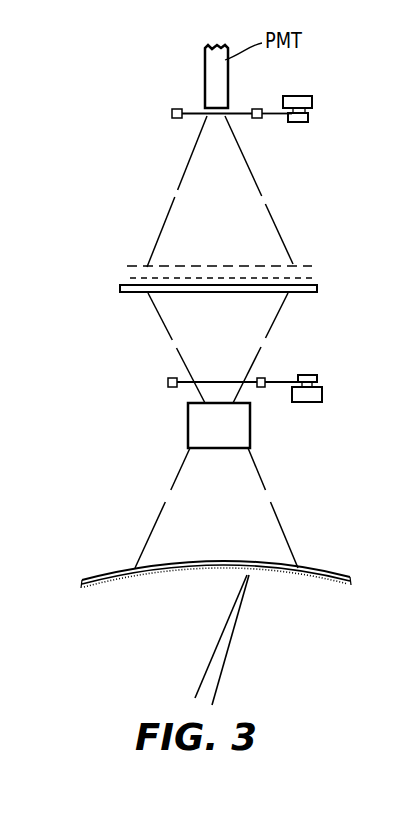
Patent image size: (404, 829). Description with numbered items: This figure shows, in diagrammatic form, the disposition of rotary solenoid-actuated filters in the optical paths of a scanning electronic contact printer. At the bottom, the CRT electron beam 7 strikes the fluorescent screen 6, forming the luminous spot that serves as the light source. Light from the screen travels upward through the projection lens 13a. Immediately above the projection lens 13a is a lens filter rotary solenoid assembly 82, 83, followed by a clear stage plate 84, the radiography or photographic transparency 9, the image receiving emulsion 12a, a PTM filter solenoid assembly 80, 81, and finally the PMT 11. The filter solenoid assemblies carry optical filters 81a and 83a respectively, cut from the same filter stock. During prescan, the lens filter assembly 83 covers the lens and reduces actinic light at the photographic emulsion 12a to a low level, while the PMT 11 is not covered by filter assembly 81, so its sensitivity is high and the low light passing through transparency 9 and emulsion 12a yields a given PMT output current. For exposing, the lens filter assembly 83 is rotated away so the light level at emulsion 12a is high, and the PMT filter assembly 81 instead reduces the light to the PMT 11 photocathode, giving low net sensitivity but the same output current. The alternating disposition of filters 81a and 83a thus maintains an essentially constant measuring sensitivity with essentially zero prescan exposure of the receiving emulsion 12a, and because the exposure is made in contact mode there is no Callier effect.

The PMT 11 is at (205, 70).
The PMT filter solenoid assembly 81 is at (172, 113).
The optical filter 81a is at (198, 117).
The PTM filter solenoid assembly 80 is at (321, 82).
The image receiving emulsion 12a is at (306, 266).
The radiography 9 is at (131, 278).
The clear stage plate 84 is at (128, 293).
The lens filter rotary solenoid assembly 83 is at (168, 382).
The optical filter 83a is at (240, 356).
The lens filter rotary solenoid assembly 82 is at (322, 400).
The projection lens 13a is at (250, 440).
The fluorescent screen 6 is at (307, 583).
The CRT electron beam 7 is at (227, 662).